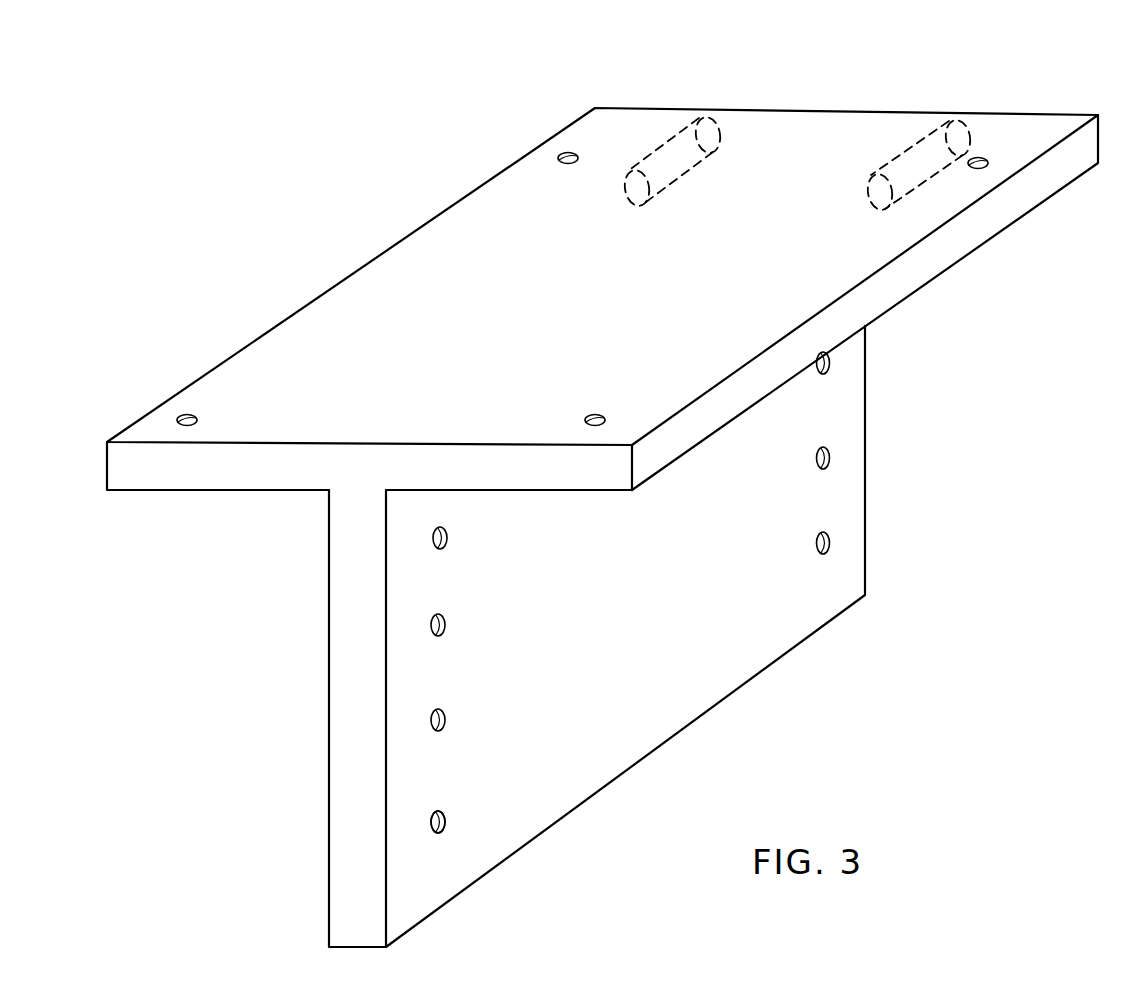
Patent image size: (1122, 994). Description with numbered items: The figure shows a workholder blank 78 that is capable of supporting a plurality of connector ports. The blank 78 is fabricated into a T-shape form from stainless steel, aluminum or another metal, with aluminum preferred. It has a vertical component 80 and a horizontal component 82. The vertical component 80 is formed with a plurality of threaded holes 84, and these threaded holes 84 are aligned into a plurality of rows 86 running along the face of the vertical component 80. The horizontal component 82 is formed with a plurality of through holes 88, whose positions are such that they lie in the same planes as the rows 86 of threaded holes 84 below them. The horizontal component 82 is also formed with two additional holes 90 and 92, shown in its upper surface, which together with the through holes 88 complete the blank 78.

The workholder blank 78 is at (352, 253).
The vertical component 80 is at (348, 713).
The horizontal component 82 is at (206, 472).
The threaded holes 84 is at (425, 825).
The rows 86 is at (457, 837).
The through holes 88 is at (600, 415).
The hole 90 is at (710, 127).
The hole 92 is at (960, 127).